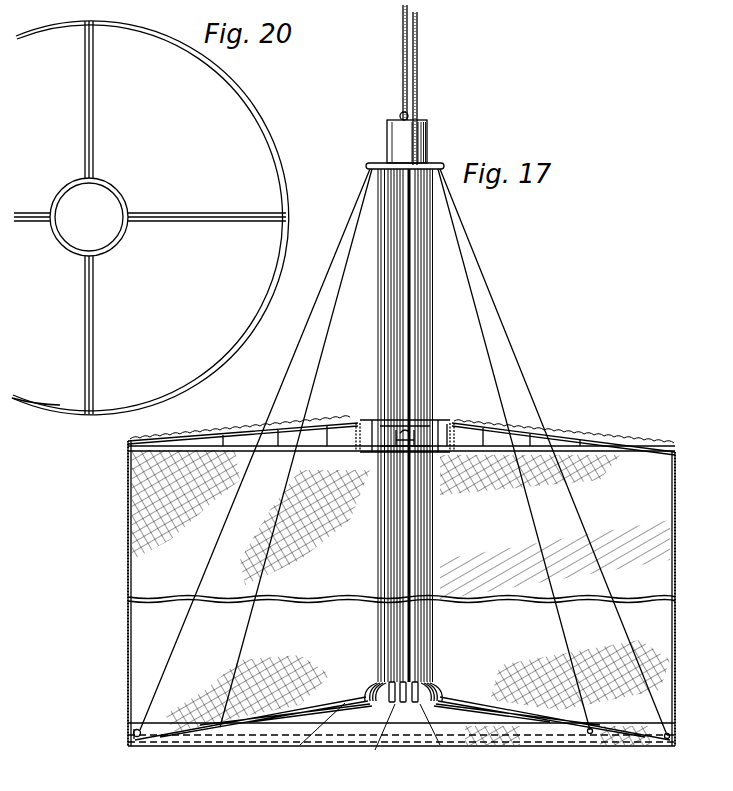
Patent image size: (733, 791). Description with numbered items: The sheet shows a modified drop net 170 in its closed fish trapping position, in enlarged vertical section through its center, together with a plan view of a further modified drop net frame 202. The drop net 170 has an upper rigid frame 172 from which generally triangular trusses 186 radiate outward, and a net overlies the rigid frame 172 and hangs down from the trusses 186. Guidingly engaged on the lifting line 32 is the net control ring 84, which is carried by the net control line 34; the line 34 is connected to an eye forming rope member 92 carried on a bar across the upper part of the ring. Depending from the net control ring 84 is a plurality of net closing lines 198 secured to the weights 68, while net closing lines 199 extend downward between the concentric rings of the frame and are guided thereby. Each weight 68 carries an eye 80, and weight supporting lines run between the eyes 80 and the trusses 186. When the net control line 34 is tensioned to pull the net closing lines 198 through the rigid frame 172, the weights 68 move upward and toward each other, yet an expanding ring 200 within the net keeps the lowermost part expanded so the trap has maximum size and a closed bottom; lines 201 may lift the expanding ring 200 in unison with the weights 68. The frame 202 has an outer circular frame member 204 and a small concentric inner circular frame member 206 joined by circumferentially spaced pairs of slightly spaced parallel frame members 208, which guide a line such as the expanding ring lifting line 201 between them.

In FIG. 17, the lifting line 32 is at (416, 63).
In FIG. 17, the net control line 34 is at (404, 62).
In FIG. 17, the weight 68 is at (352, 687).
In FIG. 17, the eye 80 is at (371, 165).
In FIG. 17, the net control ring 84 is at (431, 142).
In FIG. 17, the eye forming rope member 92 is at (400, 112).
In FIG. 17, the drop net 170 is at (401, 405).
In FIG. 17, the upper rigid frame 172 is at (468, 417).
In FIG. 17, the trusses 186 is at (283, 422).
In FIG. 17, the net closing lines 198 is at (428, 325).
In FIG. 17, the net closing lines 199 is at (128, 548).
In FIG. 17, the expanding ring 200 is at (140, 728).
In FIG. 17, the expanding ring lifting lines 201 is at (318, 292).
In FIG. 20, the drop net frame 202 is at (288, 148).
In FIG. 20, the outer circular frame member 204 is at (43, 413).
In FIG. 20, the inner circular frame member 206 is at (118, 196).
In FIG. 20, the frame members 208 is at (96, 137).